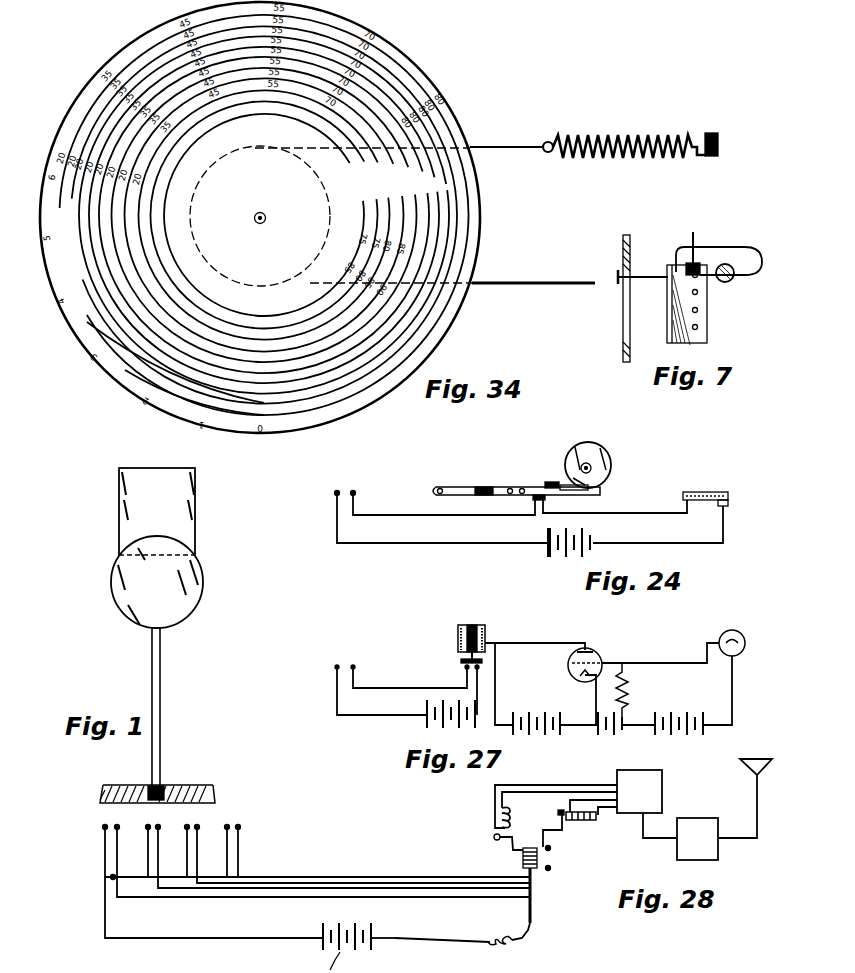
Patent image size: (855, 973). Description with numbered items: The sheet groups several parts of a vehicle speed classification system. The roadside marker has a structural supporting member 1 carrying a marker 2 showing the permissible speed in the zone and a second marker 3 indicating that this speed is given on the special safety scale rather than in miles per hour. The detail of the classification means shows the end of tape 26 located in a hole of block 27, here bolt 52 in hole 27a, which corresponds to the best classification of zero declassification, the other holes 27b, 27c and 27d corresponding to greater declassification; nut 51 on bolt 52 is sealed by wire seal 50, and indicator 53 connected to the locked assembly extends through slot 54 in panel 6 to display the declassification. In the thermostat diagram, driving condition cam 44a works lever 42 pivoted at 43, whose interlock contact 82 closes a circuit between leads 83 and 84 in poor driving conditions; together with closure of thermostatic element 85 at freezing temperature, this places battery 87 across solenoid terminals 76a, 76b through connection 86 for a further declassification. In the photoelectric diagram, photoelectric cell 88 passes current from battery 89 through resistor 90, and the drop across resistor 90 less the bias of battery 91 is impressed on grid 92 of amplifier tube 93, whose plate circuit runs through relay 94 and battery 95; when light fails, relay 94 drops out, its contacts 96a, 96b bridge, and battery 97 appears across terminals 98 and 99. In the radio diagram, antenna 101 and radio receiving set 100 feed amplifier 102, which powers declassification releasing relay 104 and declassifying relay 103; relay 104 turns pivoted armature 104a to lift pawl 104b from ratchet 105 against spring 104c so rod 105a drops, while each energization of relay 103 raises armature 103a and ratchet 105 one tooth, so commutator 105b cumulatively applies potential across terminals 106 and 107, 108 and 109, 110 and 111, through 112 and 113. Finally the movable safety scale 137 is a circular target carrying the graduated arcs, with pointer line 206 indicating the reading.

In FIG. 34, the safety scale 137 is at (440, 72).
In FIG. 34, the pointer 206 is at (499, 282).
In FIG. 7, the nut 51 is at (684, 258).
In FIG. 7, the tape 26 is at (700, 240).
In FIG. 7, the wire seal 50 is at (758, 247).
In FIG. 7, the indicator 53 is at (616, 274).
In FIG. 7, the slot 54 is at (622, 298).
In FIG. 7, the block 27 is at (666, 307).
In FIG. 7, the panel 6 is at (623, 347).
In FIG. 7, the hole 27a is at (698, 277).
In FIG. 7, the hole 27b is at (698, 294).
In FIG. 7, the hole 27c is at (698, 312).
In FIG. 7, the hole 27d is at (698, 329).
In FIG. 7, the bolt 52 is at (735, 280).
In FIG. 1, the structural supporting member 1 is at (150, 663).
In FIG. 1, the marker 2 is at (196, 486).
In FIG. 1, the second marker 3 is at (204, 570).
In FIG. 24, the solenoid terminal 76a is at (330, 497).
In FIG. 24, the solenoid terminal 76b is at (357, 495).
In FIG. 24, the lever 42 is at (500, 470).
In FIG. 24, the pivot 43 is at (515, 495).
In FIG. 24, the driving condition cam 44a is at (609, 448).
In FIG. 24, the interlock contact 82 is at (546, 502).
In FIG. 24, the lead 83 is at (522, 520).
In FIG. 24, the lead 84 is at (638, 520).
In FIG. 24, the thermostatic element 85 is at (703, 488).
In FIG. 24, the terminal 86 is at (730, 516).
In FIG. 24, the battery 87 is at (545, 560).
In FIG. 27, the terminal 98 is at (337, 660).
In FIG. 27, the terminal 99 is at (356, 660).
In FIG. 27, the relay 94 is at (487, 633).
In FIG. 27, the relay contact 96a is at (465, 668).
In FIG. 27, the relay contact 96b is at (480, 670).
In FIG. 27, the battery 97 is at (428, 733).
In FIG. 27, the battery 95 is at (540, 708).
In FIG. 27, the amplifier tube 93 is at (598, 643).
In FIG. 27, the grid 92 is at (600, 658).
In FIG. 27, the resistor 90 is at (630, 690).
In FIG. 27, the bias battery 91 is at (620, 745).
In FIG. 27, the battery 89 is at (700, 745).
In FIG. 27, the photoelectric cell 88 is at (746, 640).
In FIG. 28, the terminal 106 is at (104, 821).
In FIG. 28, the terminal 107 is at (119, 824).
In FIG. 28, the terminal 108 is at (148, 824).
In FIG. 28, the terminal 109 is at (159, 825).
In FIG. 28, the terminal 110 is at (188, 825).
In FIG. 28, the terminal 111 is at (198, 825).
In FIG. 28, the terminal 112 is at (228, 825).
In FIG. 28, the terminal 113 is at (240, 824).
In FIG. 28, the declassifying relay 103 is at (512, 812).
In FIG. 28, the armature 103a is at (505, 845).
In FIG. 28, the declassification releasing relay 104 is at (585, 822).
In FIG. 28, the pivoted armature 104a is at (560, 835).
In FIG. 28, the pawl 104b is at (552, 858).
In FIG. 28, the spring 104c is at (540, 870).
In FIG. 28, the ratchet 105 is at (534, 892).
In FIG. 28, the ratchet rod 105a is at (532, 925).
In FIG. 28, the commutator 105b is at (520, 945).
In FIG. 28, the amplifier 102 is at (664, 790).
In FIG. 28, the radio receiving set 100 is at (700, 818).
In FIG. 28, the antenna 101 is at (760, 797).